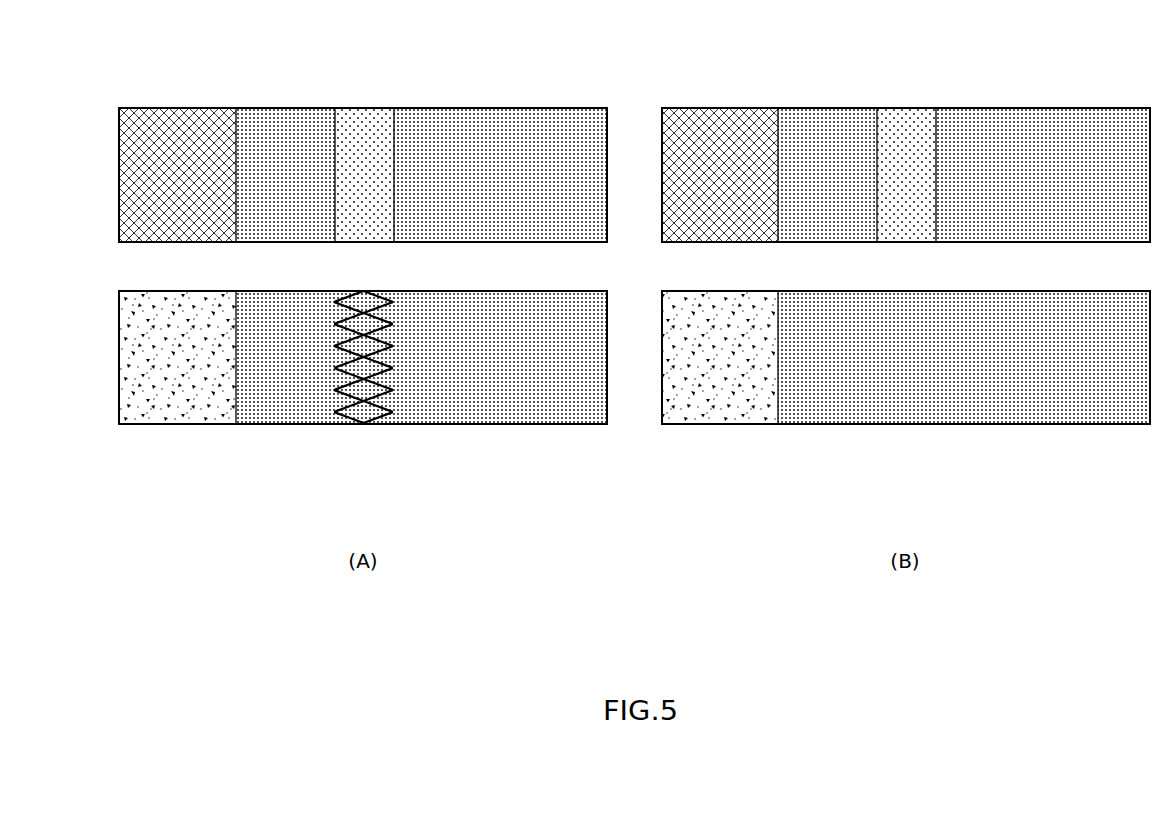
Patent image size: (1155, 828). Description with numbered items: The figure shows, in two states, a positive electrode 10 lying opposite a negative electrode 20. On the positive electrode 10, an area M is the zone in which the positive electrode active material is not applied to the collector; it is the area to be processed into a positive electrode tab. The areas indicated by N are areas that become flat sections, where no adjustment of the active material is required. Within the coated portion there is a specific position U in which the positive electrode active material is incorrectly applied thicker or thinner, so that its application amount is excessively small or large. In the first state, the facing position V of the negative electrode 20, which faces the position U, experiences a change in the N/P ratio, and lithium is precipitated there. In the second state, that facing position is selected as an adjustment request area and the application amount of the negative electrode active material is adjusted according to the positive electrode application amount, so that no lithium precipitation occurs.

The positive electrode 10 is at (634, 131).
The negative electrode 20 is at (634, 403).
The position in which positive electrode active material is incorrectly applied U is at (415, 76).
The flat section area N is at (447, 108).
The area in which positive electrode active material is not applied M is at (448, 175).
The facing position of negative electrode V is at (375, 425).